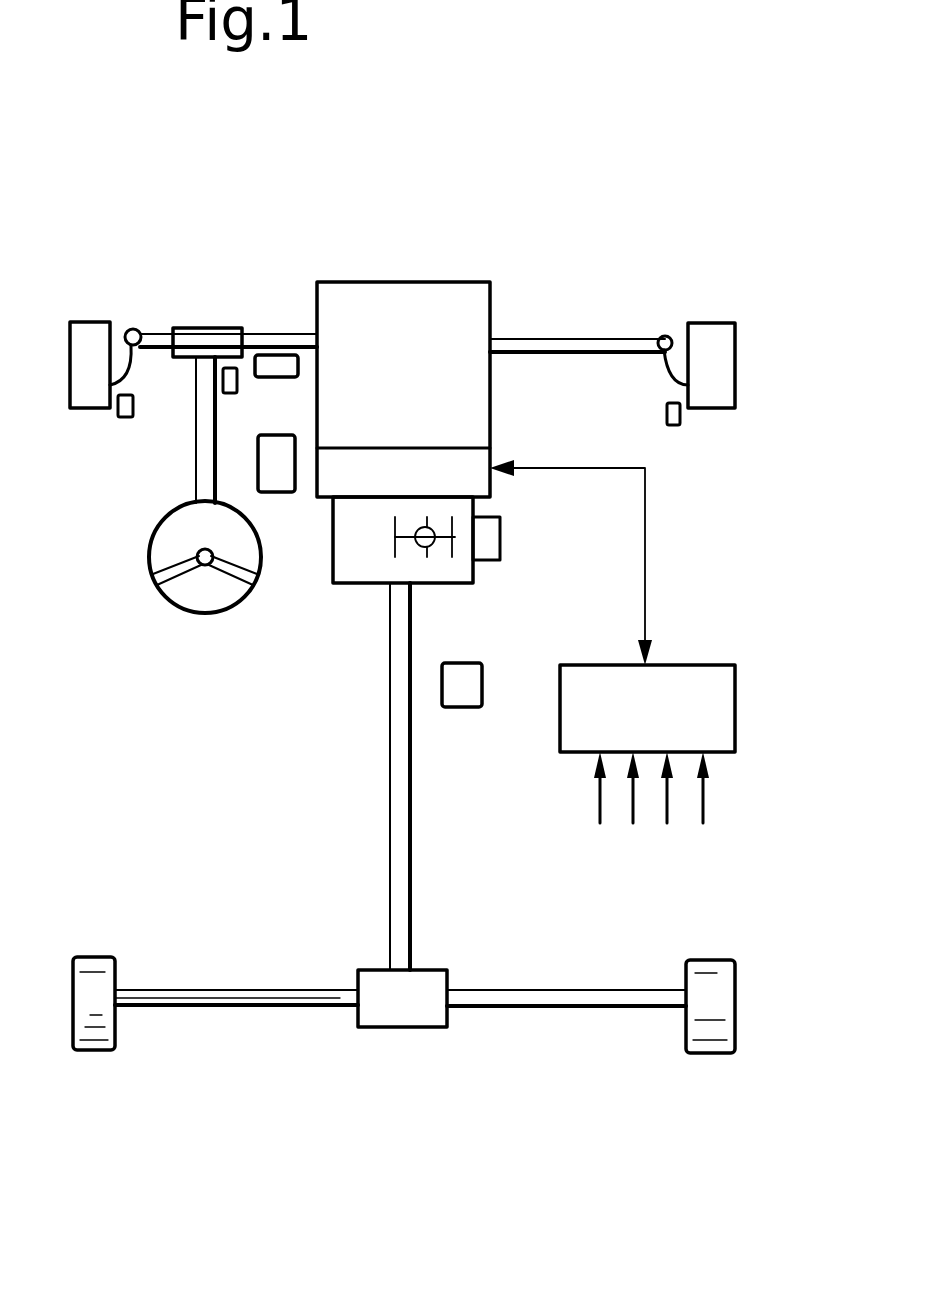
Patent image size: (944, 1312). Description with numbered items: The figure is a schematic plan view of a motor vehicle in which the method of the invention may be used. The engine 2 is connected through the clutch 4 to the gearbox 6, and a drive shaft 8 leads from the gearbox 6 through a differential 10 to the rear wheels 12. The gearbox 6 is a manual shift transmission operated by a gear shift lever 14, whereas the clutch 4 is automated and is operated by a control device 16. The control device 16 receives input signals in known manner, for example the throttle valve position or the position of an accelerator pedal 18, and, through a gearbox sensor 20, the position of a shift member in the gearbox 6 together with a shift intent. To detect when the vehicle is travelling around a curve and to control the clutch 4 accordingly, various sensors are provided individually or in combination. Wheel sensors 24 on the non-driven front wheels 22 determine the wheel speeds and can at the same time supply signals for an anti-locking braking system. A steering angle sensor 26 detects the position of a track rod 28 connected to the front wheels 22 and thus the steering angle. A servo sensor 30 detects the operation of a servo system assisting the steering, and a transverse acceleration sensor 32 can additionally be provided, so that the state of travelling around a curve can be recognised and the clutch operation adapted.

The engine 2 is at (450, 313).
The clutch 4 is at (440, 470).
The gearbox 6 is at (358, 553).
The drive shaft 8 is at (400, 835).
The differential 10 is at (397, 1000).
The rear wheels 12 is at (95, 985).
The gear shift lever 14 is at (428, 540).
The control device 16 is at (700, 688).
The accelerator pedal 18 is at (282, 465).
The gearbox sensor 20 is at (500, 530).
The front wheels 22 is at (83, 337).
The wheel sensors 24 is at (120, 415).
The steering angle sensor 26 is at (270, 362).
The track rod 28 is at (540, 347).
The servo sensor 30 is at (230, 367).
The transverse acceleration sensor 32 is at (462, 688).